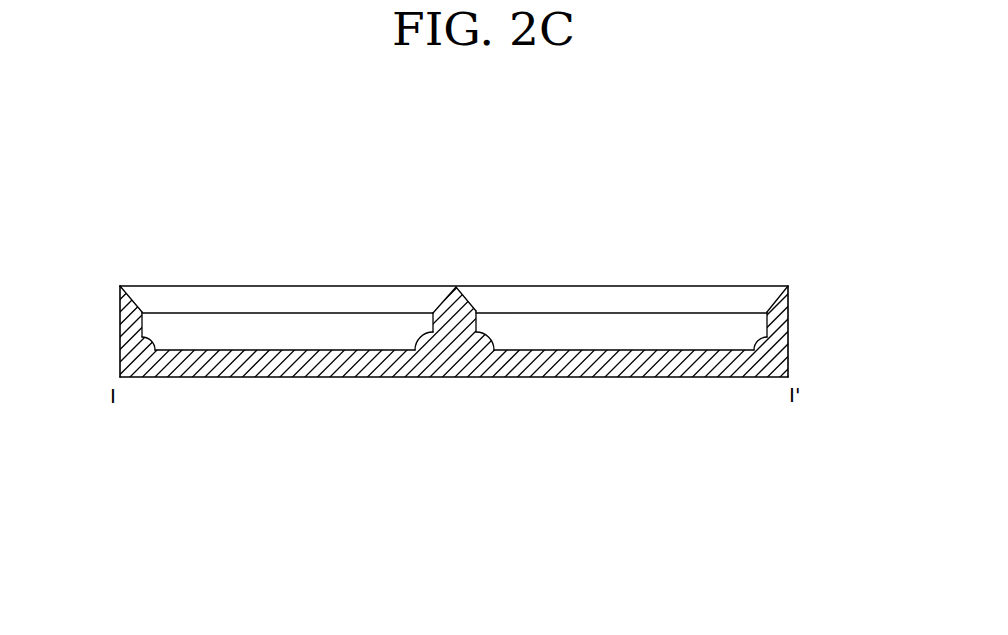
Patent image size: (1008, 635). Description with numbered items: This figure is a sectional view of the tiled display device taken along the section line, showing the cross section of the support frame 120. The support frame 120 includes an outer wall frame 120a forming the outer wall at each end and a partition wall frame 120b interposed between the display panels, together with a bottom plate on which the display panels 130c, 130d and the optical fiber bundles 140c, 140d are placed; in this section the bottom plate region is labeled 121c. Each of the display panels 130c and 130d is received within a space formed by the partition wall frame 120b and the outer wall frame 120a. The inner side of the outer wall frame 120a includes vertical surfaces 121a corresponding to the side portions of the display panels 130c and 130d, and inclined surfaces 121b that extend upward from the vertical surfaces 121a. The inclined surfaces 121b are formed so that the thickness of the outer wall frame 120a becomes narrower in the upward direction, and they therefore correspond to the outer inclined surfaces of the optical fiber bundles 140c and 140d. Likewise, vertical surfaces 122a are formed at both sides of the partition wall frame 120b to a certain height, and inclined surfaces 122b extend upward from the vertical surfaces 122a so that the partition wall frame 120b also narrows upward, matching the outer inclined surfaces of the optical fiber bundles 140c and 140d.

The support frame 120 is at (790, 329).
The outer wall frame 120a is at (130, 333).
The partition wall frame 120b is at (456, 288).
The vertical surfaces 121a is at (160, 347).
The inclined surfaces 121b is at (134, 290).
The bottom plate of frame 121c is at (350, 378).
The vertical surfaces 122a is at (413, 350).
The inclined surfaces 122b is at (428, 298).
The display panel 130c is at (618, 340).
The display panel 130d is at (289, 338).
The optical fiber bundle 140c is at (632, 300).
The optical fiber bundle 140d is at (258, 297).